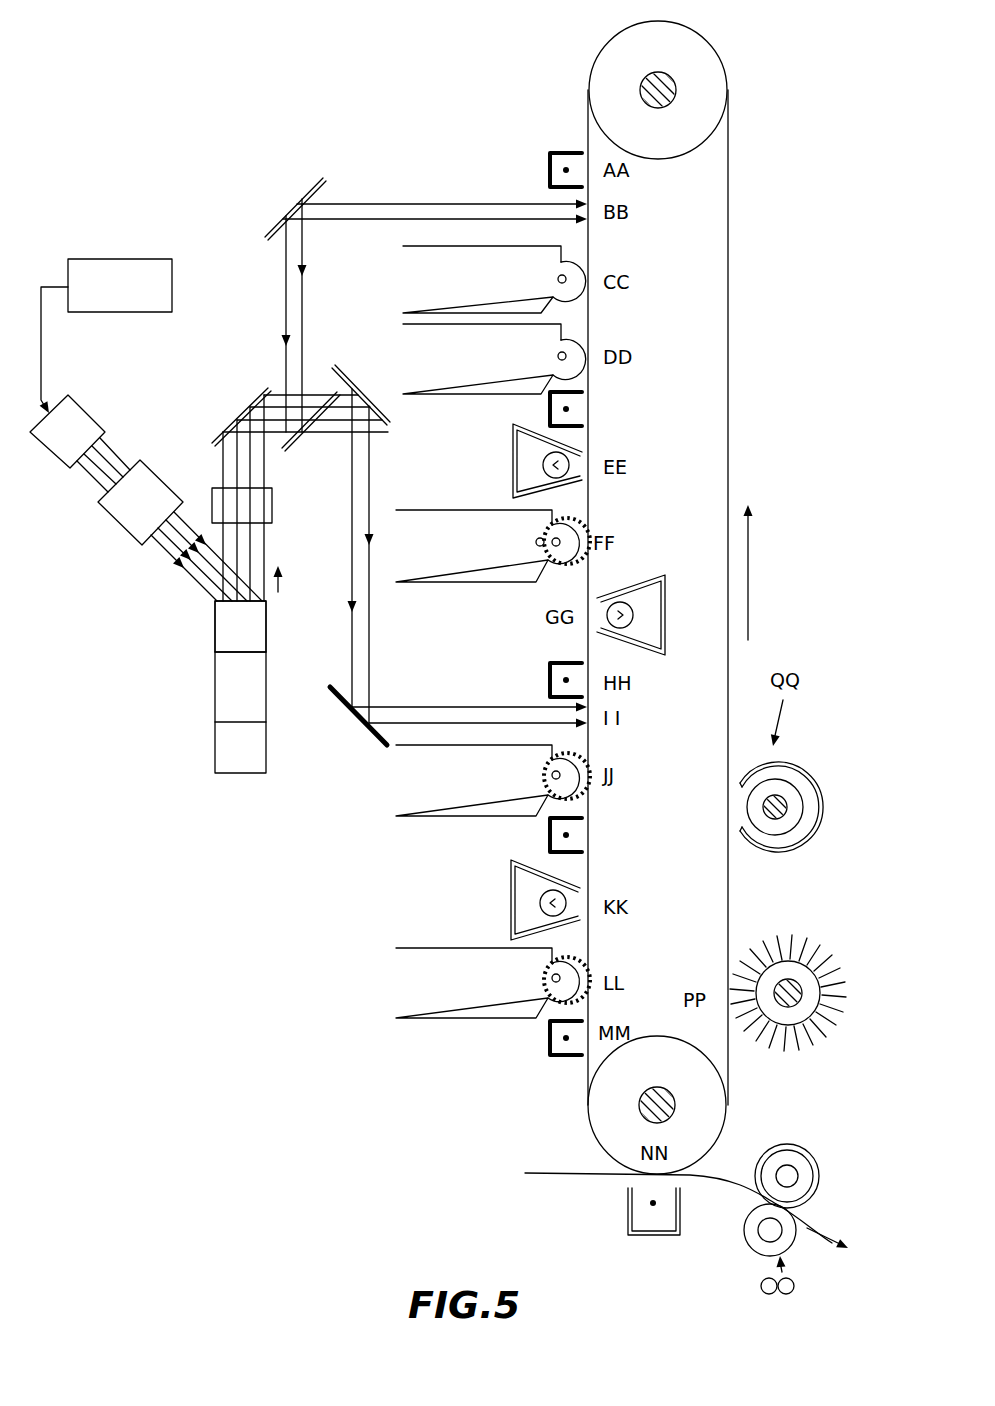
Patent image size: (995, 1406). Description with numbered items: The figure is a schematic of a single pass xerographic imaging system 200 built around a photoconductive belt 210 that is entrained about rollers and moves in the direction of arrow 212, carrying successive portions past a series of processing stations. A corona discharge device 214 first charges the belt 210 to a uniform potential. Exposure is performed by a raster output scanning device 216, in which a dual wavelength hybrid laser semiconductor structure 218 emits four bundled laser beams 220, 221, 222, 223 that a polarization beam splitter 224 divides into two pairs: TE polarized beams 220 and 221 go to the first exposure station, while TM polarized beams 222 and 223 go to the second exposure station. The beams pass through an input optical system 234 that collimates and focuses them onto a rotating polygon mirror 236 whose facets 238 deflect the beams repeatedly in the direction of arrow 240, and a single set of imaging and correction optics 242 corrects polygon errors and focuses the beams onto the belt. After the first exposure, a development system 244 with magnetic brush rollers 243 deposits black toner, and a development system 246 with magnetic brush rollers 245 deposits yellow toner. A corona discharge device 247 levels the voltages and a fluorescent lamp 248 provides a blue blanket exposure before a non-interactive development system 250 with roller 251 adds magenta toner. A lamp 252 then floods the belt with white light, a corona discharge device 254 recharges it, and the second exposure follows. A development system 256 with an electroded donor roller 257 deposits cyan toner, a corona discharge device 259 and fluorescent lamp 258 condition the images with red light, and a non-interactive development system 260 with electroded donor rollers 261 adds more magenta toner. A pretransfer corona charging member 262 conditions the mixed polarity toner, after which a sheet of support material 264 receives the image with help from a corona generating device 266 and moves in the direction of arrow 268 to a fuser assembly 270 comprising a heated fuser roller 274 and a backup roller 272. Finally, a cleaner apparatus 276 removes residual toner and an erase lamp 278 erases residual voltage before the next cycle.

The xerographic imaging system 200 is at (246, 152).
The photoconductive belt 210 is at (750, 48).
The arrow 212 is at (772, 572).
The corona discharge device 214 is at (548, 154).
The raster output scanning device 216 is at (116, 386).
The dual wavelength hybrid laser semiconductor structure 218 is at (80, 405).
The laser beam 220 is at (403, 218).
The laser beam 221 is at (452, 203).
The laser beam 222 is at (120, 458).
The laser beam 223 is at (115, 452).
The polarization beam splitter 224 is at (298, 443).
The input optical system 234 is at (172, 497).
The rotating polygon mirror 236 is at (262, 713).
The facets 238 is at (218, 638).
The arrow 240 is at (281, 588).
The imaging and correction optics 242 is at (270, 515).
The magnetic brush rollers 243 is at (578, 268).
The development system 244 is at (403, 268).
The magnetic brush rollers 245 is at (572, 340).
The development system 246 is at (403, 357).
The corona discharge device 247 is at (584, 418).
The fluorescent lamp 248 is at (513, 446).
The development system 250 is at (458, 520).
The roller 251 is at (570, 526).
The lamp 252 is at (666, 577).
The corona discharge device 254 is at (546, 681).
The development system 256 is at (410, 797).
The electroded donor roller 257 is at (572, 766).
The fluorescent lamp 258 is at (511, 893).
The corona discharge device 259 is at (584, 842).
The non-interactive development system 260 is at (432, 1012).
The electroded donor rollers 261 is at (572, 961).
The pretransfer corona charging member 262 is at (556, 1057).
The sheet of support material 264 is at (584, 1176).
The corona generating device 266 is at (628, 1235).
The arrow 268 is at (829, 1242).
The fuser assembly 270 is at (792, 1124).
The backup roller 272 is at (757, 1238).
The heated fuser roller 274 is at (800, 1167).
The cleaner apparatus 276 is at (825, 950).
The erase lamp 278 is at (802, 765).